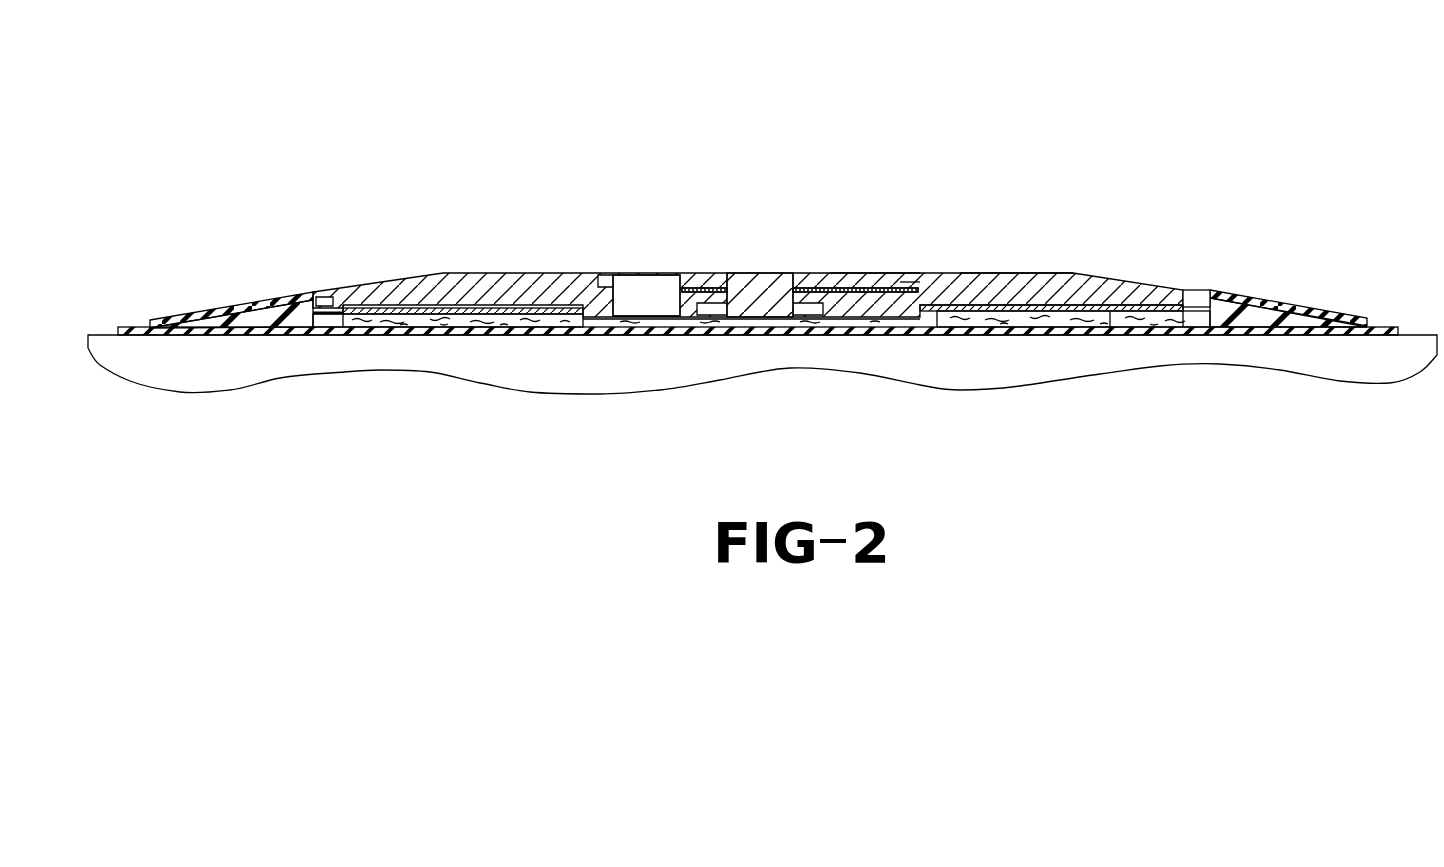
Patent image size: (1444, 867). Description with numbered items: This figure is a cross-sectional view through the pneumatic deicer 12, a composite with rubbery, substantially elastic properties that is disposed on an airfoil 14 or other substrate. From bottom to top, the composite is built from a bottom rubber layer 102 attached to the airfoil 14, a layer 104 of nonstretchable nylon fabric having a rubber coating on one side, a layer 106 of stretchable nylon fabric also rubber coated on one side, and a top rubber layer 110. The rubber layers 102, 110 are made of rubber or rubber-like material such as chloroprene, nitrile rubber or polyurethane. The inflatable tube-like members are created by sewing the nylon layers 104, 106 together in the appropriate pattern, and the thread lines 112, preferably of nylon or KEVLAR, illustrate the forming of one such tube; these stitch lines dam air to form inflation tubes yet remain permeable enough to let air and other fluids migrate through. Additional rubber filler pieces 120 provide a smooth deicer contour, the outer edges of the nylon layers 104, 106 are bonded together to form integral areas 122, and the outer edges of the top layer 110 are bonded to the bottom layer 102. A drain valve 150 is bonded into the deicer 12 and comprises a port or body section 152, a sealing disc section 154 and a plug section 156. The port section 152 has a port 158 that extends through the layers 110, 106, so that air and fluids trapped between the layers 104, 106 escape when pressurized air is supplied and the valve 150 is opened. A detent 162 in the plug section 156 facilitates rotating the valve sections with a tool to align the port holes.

The pneumatic deicer 12 is at (652, 148).
The airfoil 14 is at (988, 391).
The bottom rubber layer 102 is at (121, 327).
The nonstretchable nylon fabric layer 104 is at (427, 327).
The stretchable nylon fabric layer 106 is at (1060, 315).
The top rubber layer 110 is at (280, 298).
The thread lines 112 is at (577, 308).
The rubber filler pieces 120 is at (265, 320).
The integral areas 122 is at (347, 327).
The drain valve 150 is at (466, 258).
The port section 152 is at (1039, 273).
The sealing disc section 154 is at (882, 275).
The plug section 156 is at (752, 273).
The port 158 is at (643, 273).
The detent 162 is at (847, 273).